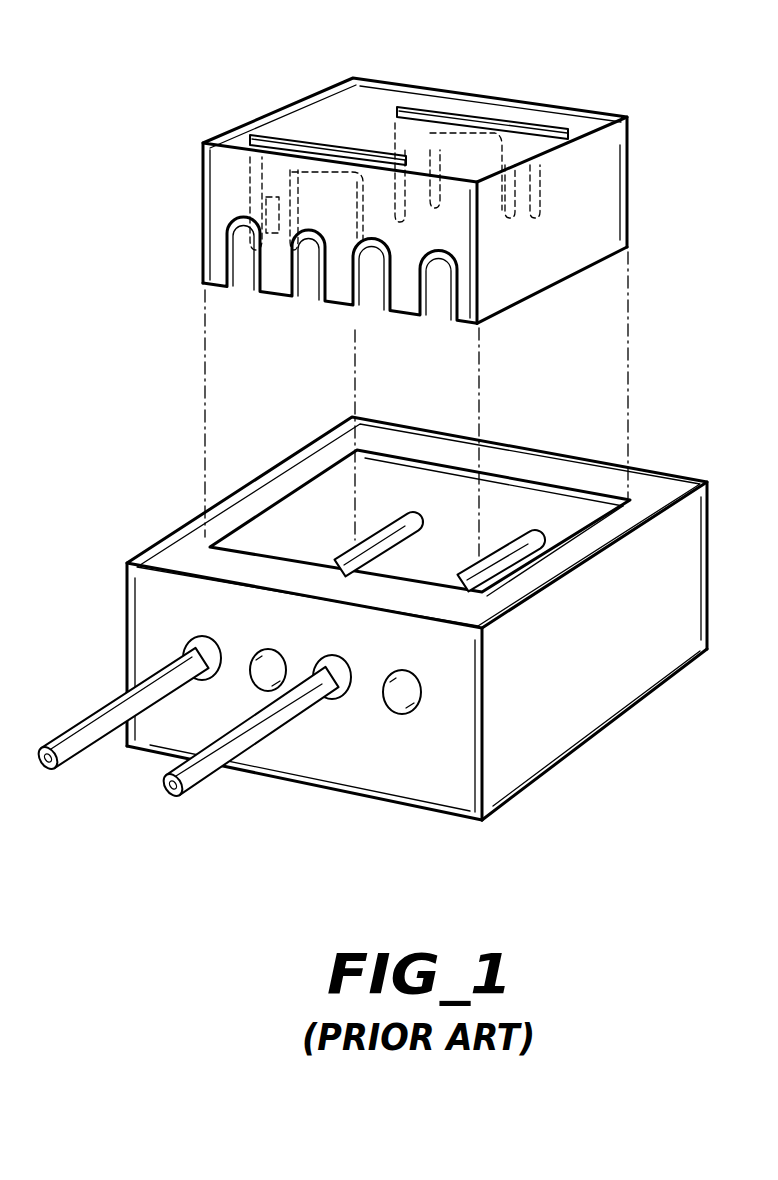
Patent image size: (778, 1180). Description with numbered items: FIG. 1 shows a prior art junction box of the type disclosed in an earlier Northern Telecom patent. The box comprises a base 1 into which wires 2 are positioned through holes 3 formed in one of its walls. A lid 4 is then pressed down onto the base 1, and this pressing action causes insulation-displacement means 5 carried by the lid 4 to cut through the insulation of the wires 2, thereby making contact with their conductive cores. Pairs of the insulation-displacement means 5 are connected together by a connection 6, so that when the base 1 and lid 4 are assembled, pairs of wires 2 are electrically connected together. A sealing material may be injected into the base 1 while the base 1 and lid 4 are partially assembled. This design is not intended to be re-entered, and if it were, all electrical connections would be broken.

The base 1 is at (577, 693).
The wires 2 is at (515, 567).
The holes 3 is at (255, 652).
The lid 4 is at (205, 223).
The insulation-displacement means 5 is at (246, 150).
The connection 6 is at (337, 147).